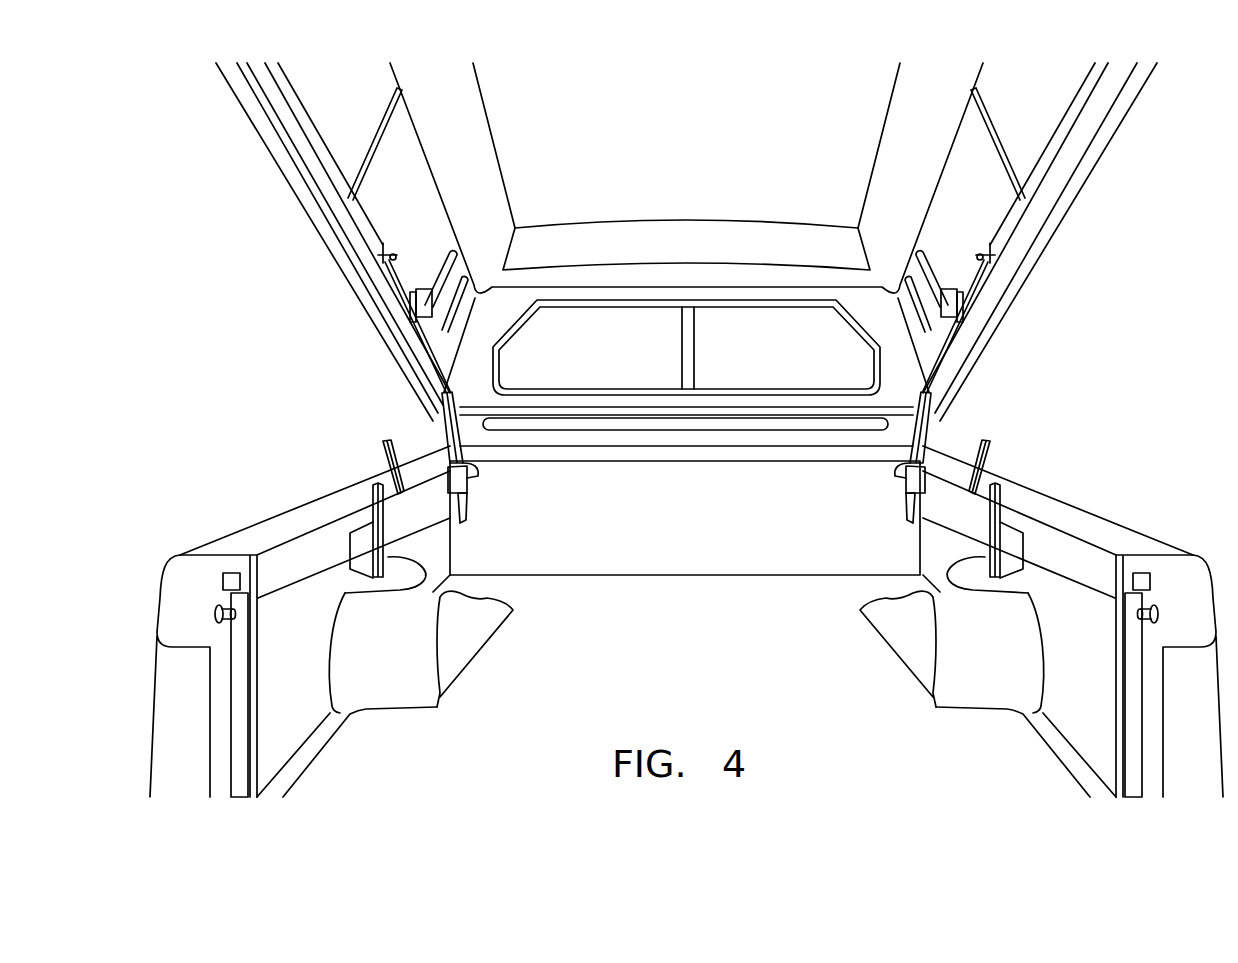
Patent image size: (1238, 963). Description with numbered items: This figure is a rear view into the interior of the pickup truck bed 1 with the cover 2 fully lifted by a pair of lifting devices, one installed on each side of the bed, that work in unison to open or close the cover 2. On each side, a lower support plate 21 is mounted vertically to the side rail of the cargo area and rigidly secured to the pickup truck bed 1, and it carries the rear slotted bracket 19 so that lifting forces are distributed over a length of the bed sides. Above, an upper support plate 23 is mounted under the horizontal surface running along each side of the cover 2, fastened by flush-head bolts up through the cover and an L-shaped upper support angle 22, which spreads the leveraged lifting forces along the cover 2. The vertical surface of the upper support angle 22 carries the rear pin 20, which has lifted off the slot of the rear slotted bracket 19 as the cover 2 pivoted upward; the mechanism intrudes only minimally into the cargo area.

The pickup truck bed 1 is at (620, 603).
The cover 2 is at (303, 163).
The rear slotted bracket 19 is at (388, 495).
The rear pin 20 is at (390, 255).
The lower support plate 21 is at (283, 557).
The upper support angle 22 is at (282, 107).
The upper support plate 23 is at (320, 218).